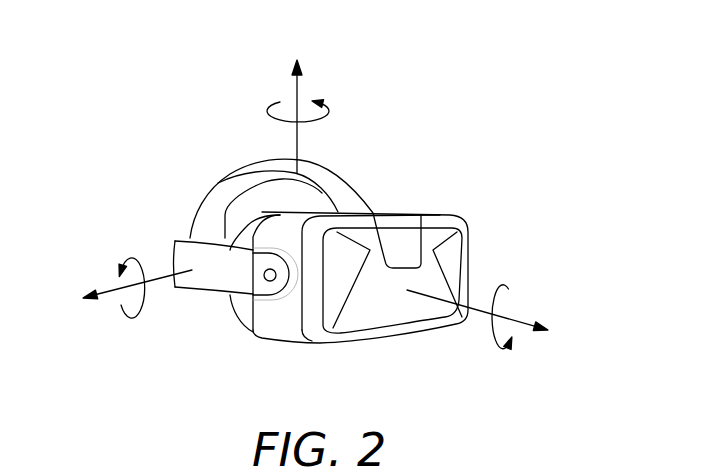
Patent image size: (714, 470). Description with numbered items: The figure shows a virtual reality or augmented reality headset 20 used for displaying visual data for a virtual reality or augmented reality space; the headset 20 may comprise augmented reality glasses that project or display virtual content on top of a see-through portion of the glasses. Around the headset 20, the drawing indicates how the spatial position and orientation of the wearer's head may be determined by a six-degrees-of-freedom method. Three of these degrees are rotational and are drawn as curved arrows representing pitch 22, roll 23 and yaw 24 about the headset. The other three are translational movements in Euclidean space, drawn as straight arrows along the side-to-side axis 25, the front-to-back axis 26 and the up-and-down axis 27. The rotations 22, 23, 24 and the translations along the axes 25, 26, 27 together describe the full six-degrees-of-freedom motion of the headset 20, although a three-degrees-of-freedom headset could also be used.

The headset 20 is at (387, 342).
The pitch 22 is at (142, 317).
The roll 23 is at (519, 302).
The yaw 24 is at (281, 102).
The side-to-side axis 25 is at (157, 285).
The front-to-back axis 26 is at (472, 313).
The up-and-down axis 27 is at (298, 140).